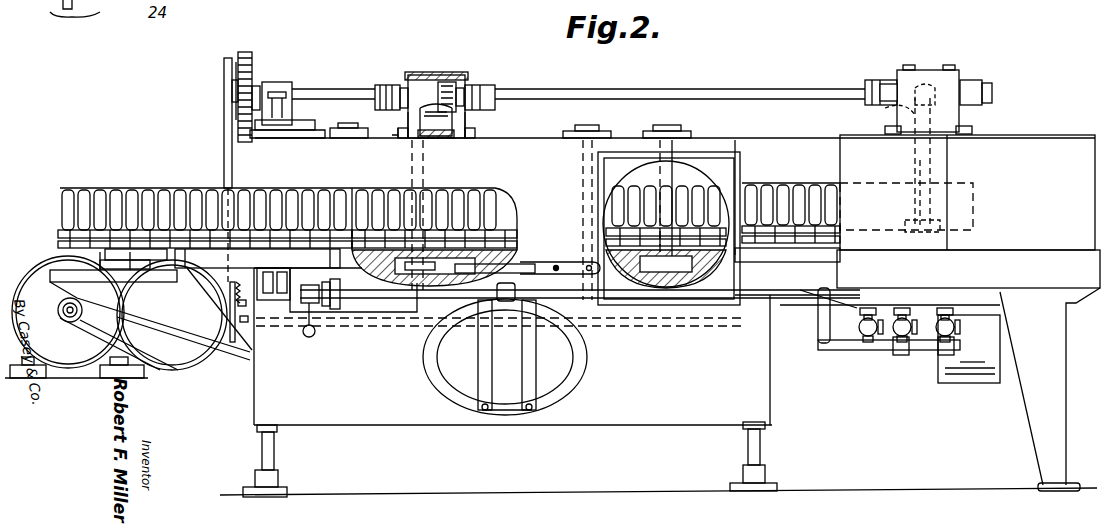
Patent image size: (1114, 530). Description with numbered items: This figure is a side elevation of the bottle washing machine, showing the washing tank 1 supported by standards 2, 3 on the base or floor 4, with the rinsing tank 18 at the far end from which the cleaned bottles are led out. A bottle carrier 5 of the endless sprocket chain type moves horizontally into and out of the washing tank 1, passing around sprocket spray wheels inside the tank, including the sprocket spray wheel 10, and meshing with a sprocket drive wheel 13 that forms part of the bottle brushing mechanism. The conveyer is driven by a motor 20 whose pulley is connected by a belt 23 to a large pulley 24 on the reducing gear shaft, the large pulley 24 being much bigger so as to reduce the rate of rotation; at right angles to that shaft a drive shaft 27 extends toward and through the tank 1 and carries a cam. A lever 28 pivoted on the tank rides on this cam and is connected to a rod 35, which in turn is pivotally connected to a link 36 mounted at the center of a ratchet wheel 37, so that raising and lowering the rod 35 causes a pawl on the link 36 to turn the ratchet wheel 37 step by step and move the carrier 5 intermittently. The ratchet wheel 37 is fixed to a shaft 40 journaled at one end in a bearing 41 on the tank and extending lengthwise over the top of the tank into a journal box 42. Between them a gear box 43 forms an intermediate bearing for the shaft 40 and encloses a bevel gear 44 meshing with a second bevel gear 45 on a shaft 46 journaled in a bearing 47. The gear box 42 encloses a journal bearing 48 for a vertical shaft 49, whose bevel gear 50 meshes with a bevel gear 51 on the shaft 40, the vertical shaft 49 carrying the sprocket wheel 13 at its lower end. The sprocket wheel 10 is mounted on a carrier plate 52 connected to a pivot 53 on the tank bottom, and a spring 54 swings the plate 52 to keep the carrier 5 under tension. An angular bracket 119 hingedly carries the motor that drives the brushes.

The washing tank 1 is at (262, 398).
The standard 2 is at (262, 450).
The standard 3 is at (748, 443).
The base or floor 4 is at (409, 494).
The bottle carrier 5 is at (176, 188).
The sprocket spray wheel 10 is at (512, 245).
The sprocket drive wheel 13 is at (975, 222).
The rinsing tank 18 is at (1068, 138).
The motor 20 is at (44, 260).
The belt 23 is at (88, 338).
The large pulley 24 is at (183, 364).
The drive shaft 27 is at (372, 328).
The lever 28 is at (228, 296).
The rod 35 is at (224, 126).
The link 36 is at (228, 58).
The ratchet wheel 37 is at (255, 52).
The shaft 40 is at (640, 92).
The bearing 41 is at (283, 82).
The journal box 42 is at (938, 70).
The gear box 43 is at (428, 76).
The bevel gear 44 is at (455, 82).
The bevel gear 45 is at (445, 114).
The shaft 46 is at (430, 163).
The bearing 47 is at (404, 136).
The journal bearing 48 is at (935, 126).
The vertical shaft 49 is at (915, 175).
The bevel gear 50 is at (896, 113).
The bevel gear 51 is at (940, 105).
The carrier plate 52 is at (575, 262).
The pivot 53 is at (585, 191).
The spring 54 is at (548, 266).
The angular bracket 119 is at (938, 376).